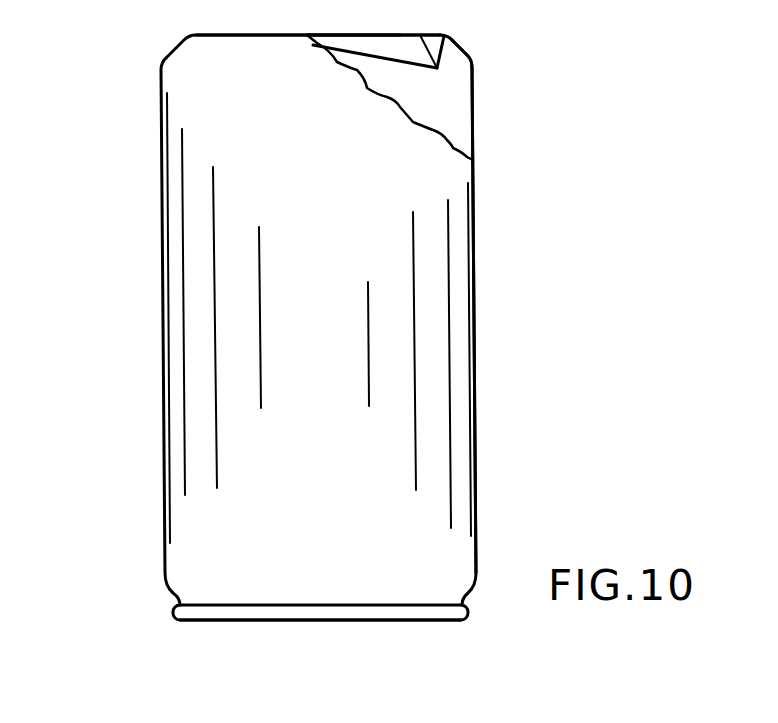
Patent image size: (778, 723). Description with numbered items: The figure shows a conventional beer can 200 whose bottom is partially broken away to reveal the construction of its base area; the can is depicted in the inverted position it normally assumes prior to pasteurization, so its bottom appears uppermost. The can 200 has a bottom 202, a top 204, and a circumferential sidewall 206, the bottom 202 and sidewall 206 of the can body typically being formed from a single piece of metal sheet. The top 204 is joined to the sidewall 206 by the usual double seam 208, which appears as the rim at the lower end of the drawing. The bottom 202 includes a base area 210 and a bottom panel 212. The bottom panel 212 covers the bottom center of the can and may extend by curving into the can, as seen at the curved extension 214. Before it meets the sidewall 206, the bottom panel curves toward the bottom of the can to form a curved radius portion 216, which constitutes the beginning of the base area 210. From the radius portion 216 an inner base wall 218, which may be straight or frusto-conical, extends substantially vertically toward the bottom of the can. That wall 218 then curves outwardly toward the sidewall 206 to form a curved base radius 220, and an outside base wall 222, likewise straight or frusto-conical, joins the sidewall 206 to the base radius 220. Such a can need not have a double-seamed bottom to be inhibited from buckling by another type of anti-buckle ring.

The beer can 200 is at (152, 332).
The bottom 202 is at (247, 34).
The top 204 is at (410, 620).
The circumferential sidewall 206 is at (476, 343).
The double seam 208 is at (176, 610).
The base area 210 is at (457, 68).
The bottom panel 212 is at (343, 45).
The curved extension of bottom panel 214 is at (403, 60).
The curved radius portion 216 is at (440, 72).
The inner base wall 218 is at (420, 35).
The curved base radius 220 is at (452, 36).
The outside base wall 222 is at (462, 48).